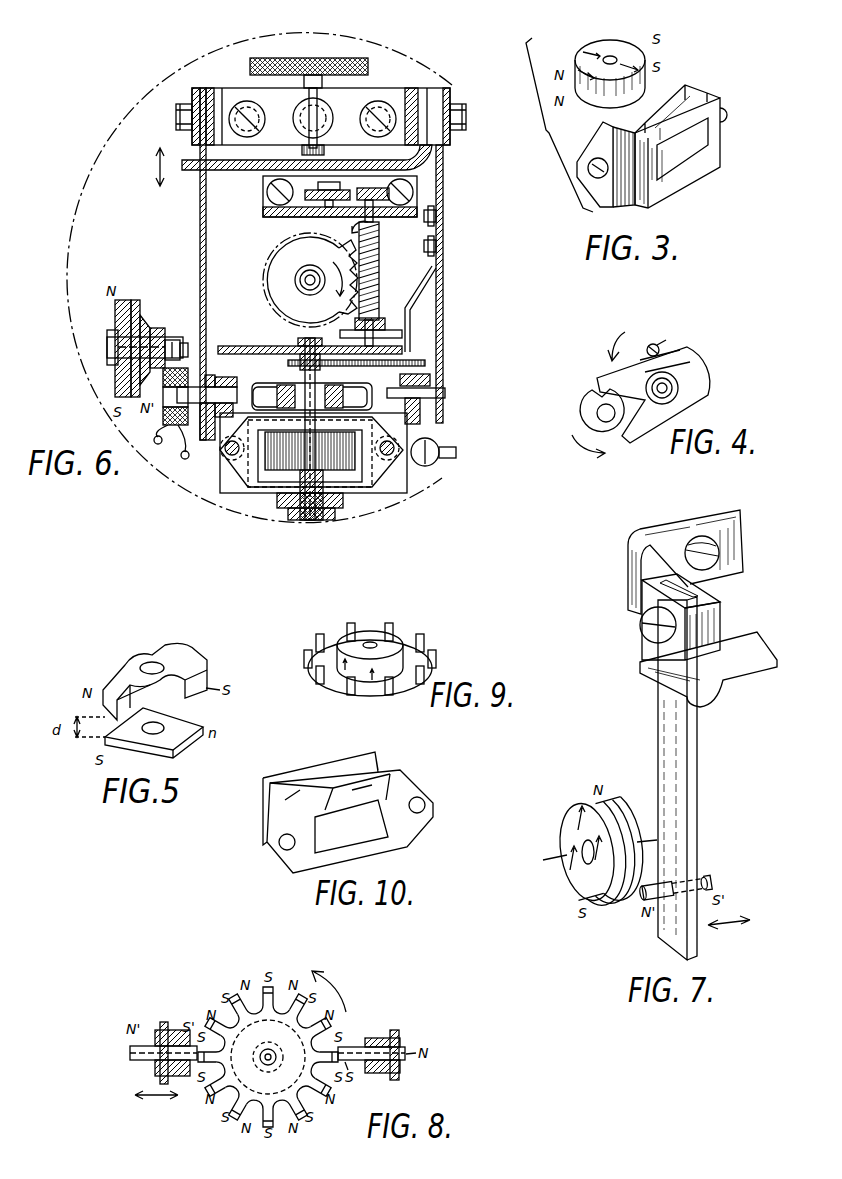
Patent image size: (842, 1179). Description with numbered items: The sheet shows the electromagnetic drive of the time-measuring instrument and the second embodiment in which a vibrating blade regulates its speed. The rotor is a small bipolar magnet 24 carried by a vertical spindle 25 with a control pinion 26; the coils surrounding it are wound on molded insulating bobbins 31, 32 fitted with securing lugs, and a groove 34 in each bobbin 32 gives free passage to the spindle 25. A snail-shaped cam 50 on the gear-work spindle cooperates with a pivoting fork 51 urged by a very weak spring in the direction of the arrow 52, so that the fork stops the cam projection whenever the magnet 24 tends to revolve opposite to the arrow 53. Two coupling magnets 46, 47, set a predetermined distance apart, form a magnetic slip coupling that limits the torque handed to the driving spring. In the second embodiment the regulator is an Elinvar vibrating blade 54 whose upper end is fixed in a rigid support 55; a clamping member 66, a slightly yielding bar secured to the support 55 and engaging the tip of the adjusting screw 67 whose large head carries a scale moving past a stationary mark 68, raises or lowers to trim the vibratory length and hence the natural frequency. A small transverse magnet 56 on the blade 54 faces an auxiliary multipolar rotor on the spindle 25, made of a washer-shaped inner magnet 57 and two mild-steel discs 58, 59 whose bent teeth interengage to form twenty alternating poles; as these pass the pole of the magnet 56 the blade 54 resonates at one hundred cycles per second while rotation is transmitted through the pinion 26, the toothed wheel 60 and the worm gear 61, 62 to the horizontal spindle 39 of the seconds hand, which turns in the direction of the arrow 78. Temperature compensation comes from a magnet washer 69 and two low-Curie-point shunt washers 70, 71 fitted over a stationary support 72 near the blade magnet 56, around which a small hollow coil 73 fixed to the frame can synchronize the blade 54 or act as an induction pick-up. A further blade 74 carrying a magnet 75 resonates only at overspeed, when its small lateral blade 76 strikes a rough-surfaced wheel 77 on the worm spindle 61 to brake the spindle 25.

In FIG. 6, the bipolar magnet 24 is at (348, 470).
In FIG. 3, the bipolar magnet 24 is at (590, 46).
In FIG. 6, the vertical spindle 25 is at (300, 478).
In FIG. 6, the control pinion 26 is at (304, 366).
In FIG. 10, the bobbin 31 is at (410, 830).
In FIG. 3, the bobbin 32 is at (658, 195).
In FIG. 3, the groove 34 is at (625, 108).
In FIG. 6, the horizontal spindle 39 is at (305, 281).
In FIG. 5, the magnet 46 is at (176, 745).
In FIG. 5, the magnet 47 is at (110, 678).
In FIG. 6, the snail-shaped cam 50 is at (418, 190).
In FIG. 4, the snail-shaped cam 50 is at (582, 409).
In FIG. 6, the pivoting fork 51 is at (268, 200).
In FIG. 4, the pivoting fork 51 is at (600, 380).
In FIG. 4, the arrow 52 is at (611, 336).
In FIG. 4, the arrow 53 is at (583, 458).
In FIG. 6, the vibrating blade 54 is at (200, 240).
In FIG. 7, the vibrating blade 54 is at (660, 750).
In FIG. 8, the vibrating blade 54 is at (165, 1032).
In FIG. 6, the support 55 is at (211, 98).
In FIG. 7, the support 55 is at (628, 565).
In FIG. 6, the transverse magnet 56 is at (252, 386).
In FIG. 7, the transverse magnet 56 is at (706, 884).
In FIG. 8, the transverse magnet 56 is at (142, 1062).
In FIG. 6, the inner magnet 57 is at (280, 386).
In FIG. 9, the inner magnet 57 is at (354, 632).
In FIG. 6, the disc 58 is at (370, 389).
In FIG. 9, the disc 58 is at (318, 688).
In FIG. 8, the disc 58 is at (300, 1094).
In FIG. 6, the disc 59 is at (370, 410).
In FIG. 8, the disc 59 is at (235, 1100).
In FIG. 6, the toothed wheel 60 is at (427, 363).
In FIG. 6, the worm 61 is at (379, 270).
In FIG. 6, the worm wheel 62 is at (300, 250).
In FIG. 6, the clamping member 66 is at (186, 170).
In FIG. 7, the clamping member 66 is at (642, 678).
In FIG. 6, the adjusting screw 67 is at (368, 69).
In FIG. 6, the stationary mark 68 is at (312, 24).
In FIG. 7, the magnet washer 69 is at (576, 811).
In FIG. 6, the shunt washer 70 is at (127, 302).
In FIG. 7, the shunt washer 70 is at (618, 903).
In FIG. 6, the shunt washer 71 is at (146, 326).
In FIG. 7, the shunt washer 71 is at (631, 897).
In FIG. 6, the stationary support 72 is at (160, 330).
In FIG. 6, the hollow coil 73 is at (171, 417).
In FIG. 6, the vibrating blade 74 is at (443, 333).
In FIG. 8, the vibrating blade 74 is at (395, 1036).
In FIG. 6, the magnet 75 is at (448, 398).
In FIG. 6, the small blade 76 is at (412, 318).
In FIG. 6, the rough-surfaced wheel 77 is at (392, 330).
In FIG. 6, the arrow 78 is at (323, 289).